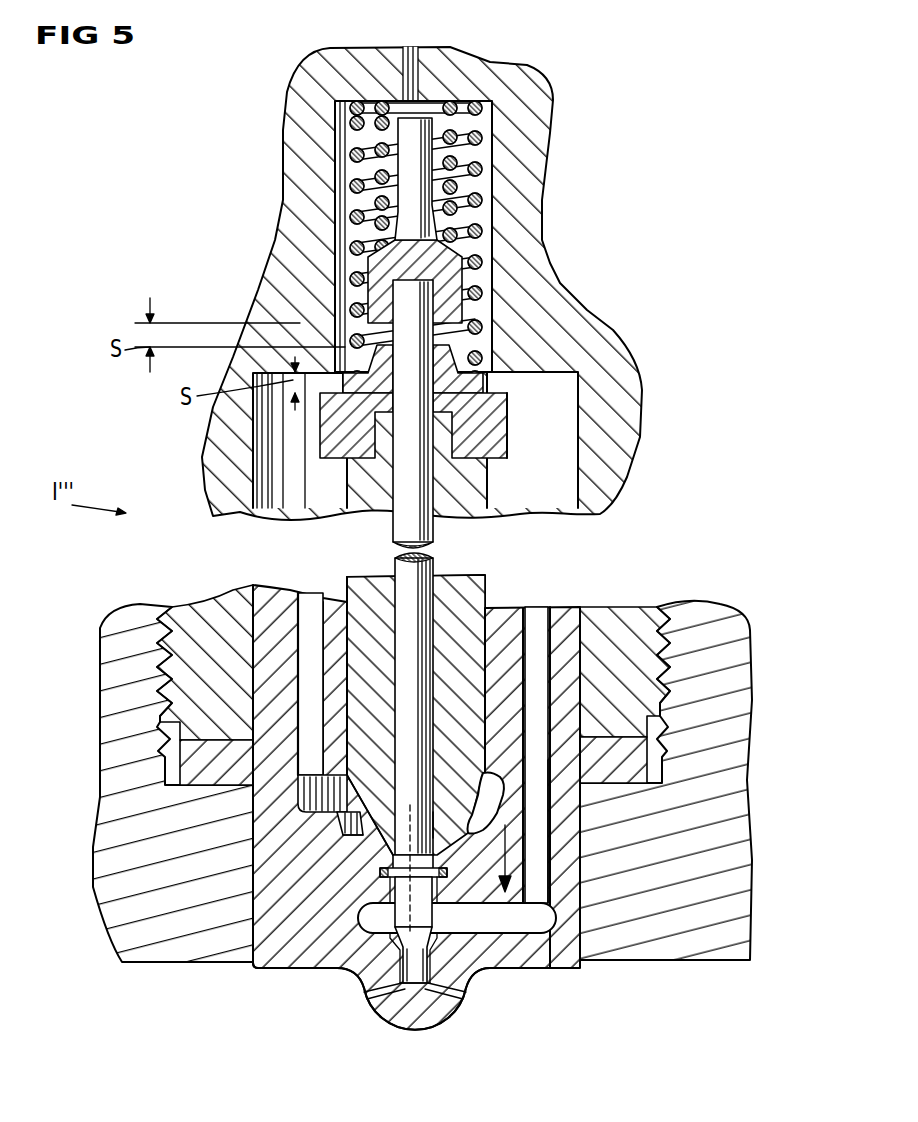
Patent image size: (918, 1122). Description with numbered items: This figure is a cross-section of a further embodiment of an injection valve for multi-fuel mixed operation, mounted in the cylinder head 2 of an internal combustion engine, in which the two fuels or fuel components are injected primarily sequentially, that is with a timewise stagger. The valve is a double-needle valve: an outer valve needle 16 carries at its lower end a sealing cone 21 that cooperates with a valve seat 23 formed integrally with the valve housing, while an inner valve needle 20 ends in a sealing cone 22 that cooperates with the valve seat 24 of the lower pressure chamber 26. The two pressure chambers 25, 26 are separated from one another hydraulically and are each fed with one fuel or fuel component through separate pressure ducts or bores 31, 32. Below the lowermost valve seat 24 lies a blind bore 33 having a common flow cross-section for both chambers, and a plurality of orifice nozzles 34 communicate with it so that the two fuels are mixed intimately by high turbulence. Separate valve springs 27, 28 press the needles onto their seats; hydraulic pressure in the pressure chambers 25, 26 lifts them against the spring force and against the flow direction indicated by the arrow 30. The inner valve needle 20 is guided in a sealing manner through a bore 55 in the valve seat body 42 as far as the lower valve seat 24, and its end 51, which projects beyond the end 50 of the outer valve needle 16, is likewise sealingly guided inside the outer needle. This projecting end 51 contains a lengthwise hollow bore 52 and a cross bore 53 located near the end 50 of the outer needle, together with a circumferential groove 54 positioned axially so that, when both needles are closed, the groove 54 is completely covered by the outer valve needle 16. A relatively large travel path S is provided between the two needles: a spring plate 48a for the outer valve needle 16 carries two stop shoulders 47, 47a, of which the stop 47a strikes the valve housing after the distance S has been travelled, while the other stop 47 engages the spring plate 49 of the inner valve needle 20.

The cylinder head 2 is at (182, 930).
The outer valve needle 16 is at (470, 610).
The inner valve needle 20 is at (413, 620).
The sealing cone 21 is at (358, 856).
The sealing cone 22 is at (400, 982).
The valve seat 23 is at (340, 839).
The valve seat 24 is at (420, 944).
The pressure chamber 25 is at (318, 790).
The pressure chamber 26 is at (404, 904).
The valve spring 27 is at (484, 140).
The valve spring 28 is at (440, 190).
The arrow 30 is at (505, 866).
The pressure bore 31 is at (307, 623).
The pressure bore 32 is at (537, 647).
The blind bore 33 is at (466, 983).
The orifice nozzles 34 is at (437, 990).
The valve seat body 42 is at (265, 968).
The stop shoulder 47 is at (462, 352).
The stop shoulder 47a is at (508, 418).
The spring plate 48a is at (507, 447).
The spring plate 49 is at (462, 290).
The end of outer valve needle 50 is at (393, 855).
The projecting end of inner valve needle 51 is at (397, 918).
The hollow bore 52 is at (407, 894).
The cross bore 53 is at (414, 704).
The circumferential groove 54 is at (417, 823).
The bore 55 is at (440, 893).